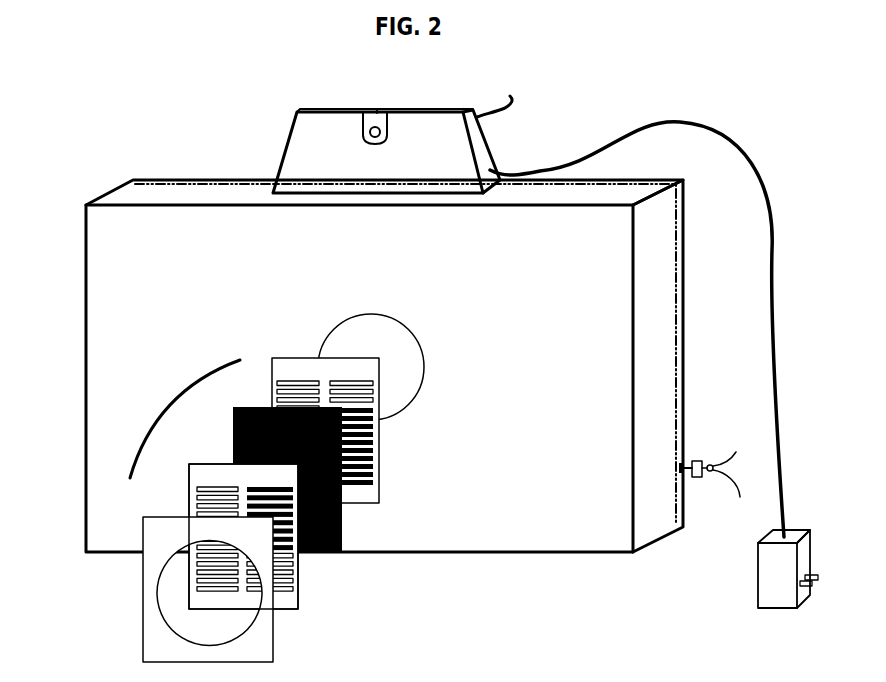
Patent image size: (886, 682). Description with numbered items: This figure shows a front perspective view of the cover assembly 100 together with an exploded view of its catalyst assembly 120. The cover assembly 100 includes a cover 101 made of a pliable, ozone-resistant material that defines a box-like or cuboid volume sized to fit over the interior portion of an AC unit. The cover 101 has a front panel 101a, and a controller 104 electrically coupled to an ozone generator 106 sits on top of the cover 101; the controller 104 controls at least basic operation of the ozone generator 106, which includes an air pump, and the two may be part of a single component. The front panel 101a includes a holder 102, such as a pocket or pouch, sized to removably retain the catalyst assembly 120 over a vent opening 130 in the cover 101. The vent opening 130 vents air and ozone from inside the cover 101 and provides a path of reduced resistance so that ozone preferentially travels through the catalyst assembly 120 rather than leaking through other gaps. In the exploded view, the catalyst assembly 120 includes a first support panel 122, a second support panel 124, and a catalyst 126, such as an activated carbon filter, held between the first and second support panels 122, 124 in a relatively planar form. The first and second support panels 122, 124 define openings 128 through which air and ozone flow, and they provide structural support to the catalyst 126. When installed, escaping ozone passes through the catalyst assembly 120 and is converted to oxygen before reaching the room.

The cover assembly 100 is at (74, 99).
The cover 101 is at (83, 236).
The front panel 101a is at (610, 535).
The holder 102 is at (242, 643).
The controller 104 is at (410, 130).
The ozone generator 106 is at (647, 352).
The catalyst assembly 120 is at (171, 409).
The first support panel 122 is at (375, 493).
The second support panel 124 is at (280, 597).
The catalyst 126 is at (342, 522).
The openings 128 is at (368, 448).
The vent opening 130 is at (404, 375).